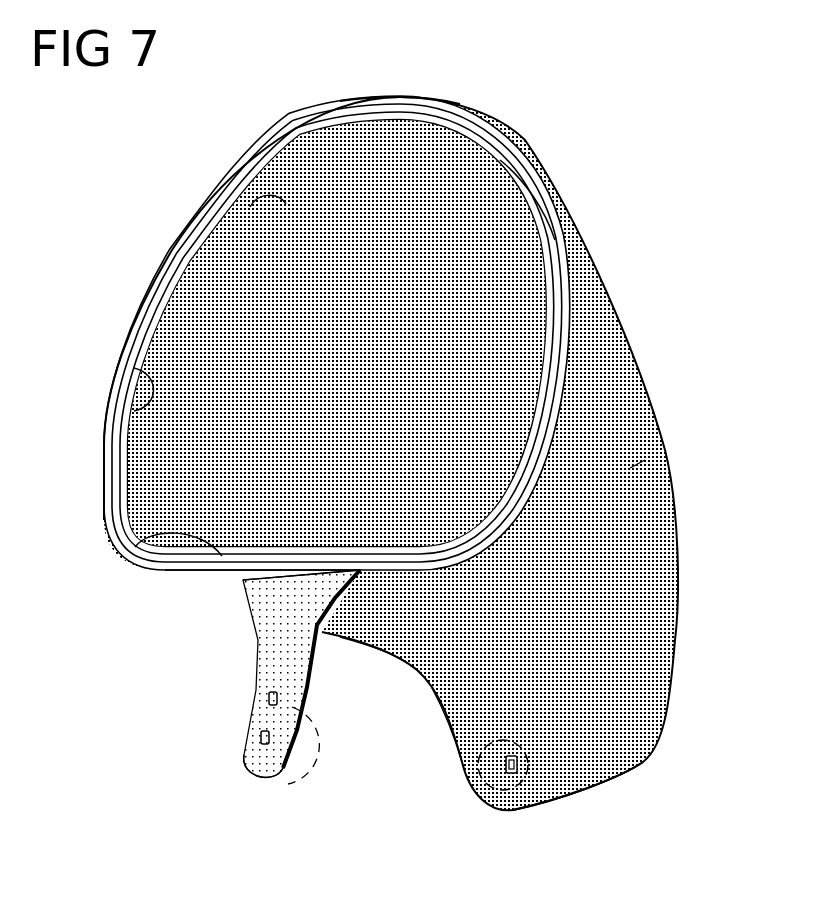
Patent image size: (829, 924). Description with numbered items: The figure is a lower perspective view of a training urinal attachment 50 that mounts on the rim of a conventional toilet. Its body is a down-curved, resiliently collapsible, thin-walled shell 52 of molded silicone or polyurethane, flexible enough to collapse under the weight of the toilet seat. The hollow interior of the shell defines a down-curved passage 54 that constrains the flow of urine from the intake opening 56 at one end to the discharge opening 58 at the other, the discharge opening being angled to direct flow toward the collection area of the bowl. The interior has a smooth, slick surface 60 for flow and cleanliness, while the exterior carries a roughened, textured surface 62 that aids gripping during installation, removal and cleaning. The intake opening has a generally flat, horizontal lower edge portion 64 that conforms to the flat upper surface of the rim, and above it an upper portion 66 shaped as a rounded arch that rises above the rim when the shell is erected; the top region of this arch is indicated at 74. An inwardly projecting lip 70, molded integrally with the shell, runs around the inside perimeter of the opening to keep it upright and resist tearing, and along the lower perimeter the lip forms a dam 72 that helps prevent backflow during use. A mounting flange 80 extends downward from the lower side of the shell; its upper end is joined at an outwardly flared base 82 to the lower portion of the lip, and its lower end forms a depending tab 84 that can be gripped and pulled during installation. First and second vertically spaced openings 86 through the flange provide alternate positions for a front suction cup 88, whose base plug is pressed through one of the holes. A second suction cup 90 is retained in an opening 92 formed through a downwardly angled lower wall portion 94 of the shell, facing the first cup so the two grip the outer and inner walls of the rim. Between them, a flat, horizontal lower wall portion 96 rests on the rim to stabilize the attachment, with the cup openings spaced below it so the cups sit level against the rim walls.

The training urinal attachment 50 is at (662, 93).
The shell 52 is at (648, 373).
The passage 54 is at (232, 333).
The intake opening 56 is at (104, 433).
The discharge opening 58 is at (597, 782).
The smooth surface 60 is at (275, 205).
The textured surface 62 is at (640, 463).
The lower edge portion 64 is at (185, 582).
The upper portion 66 is at (532, 180).
The lip 70 is at (140, 372).
The dam 72 is at (133, 548).
The top rim portion 74 is at (378, 98).
The mounting flange 80 is at (260, 650).
The base 82 is at (243, 593).
The tab 84 is at (258, 781).
The openings 86 is at (268, 700).
The front suction cup 88 is at (318, 796).
The second suction cup 90 is at (494, 815).
The opening 92 is at (506, 767).
The lower wall portion 94 is at (452, 735).
The horizontal lower wall portion 96 is at (383, 636).